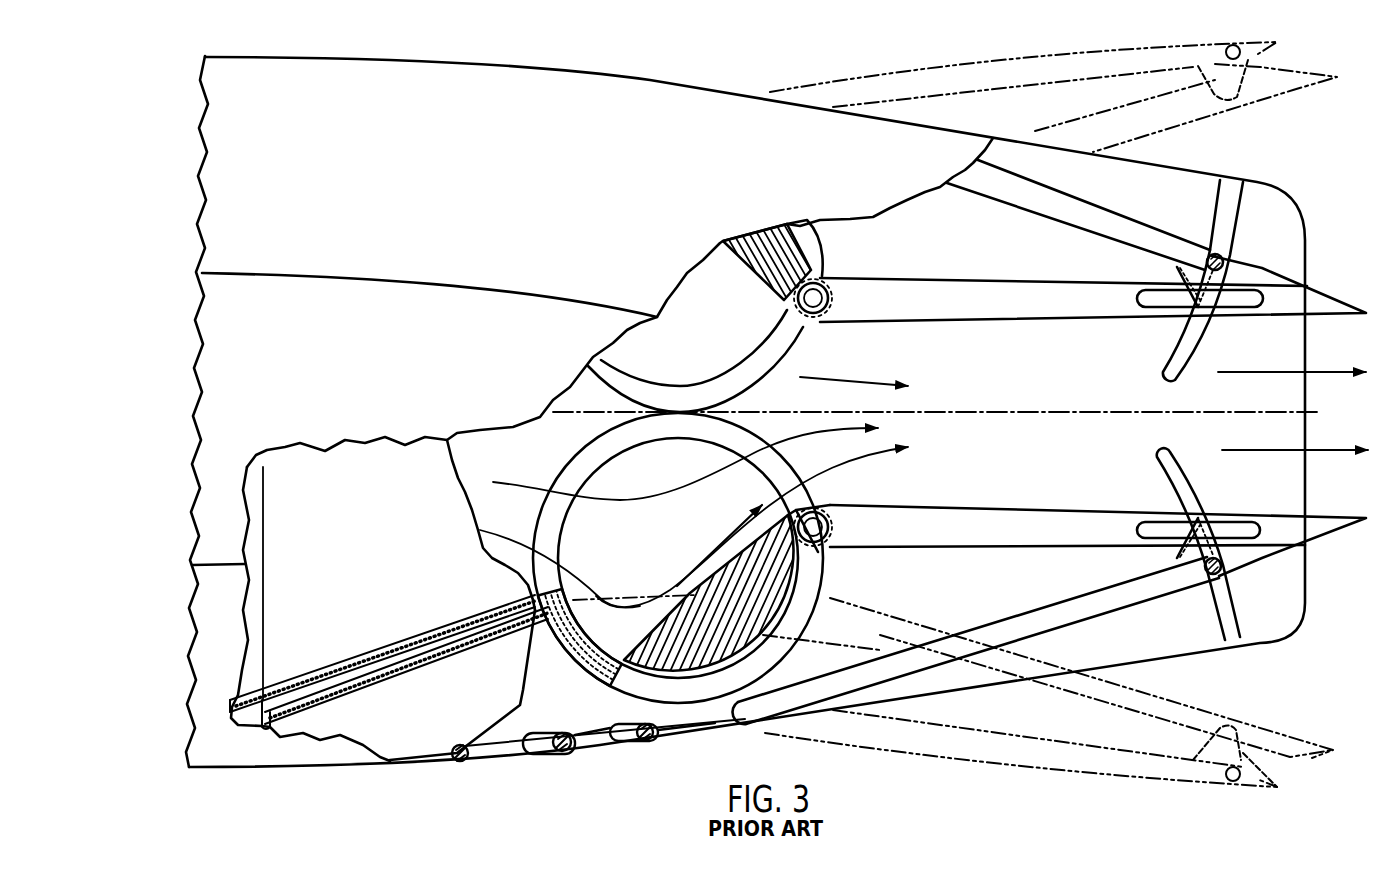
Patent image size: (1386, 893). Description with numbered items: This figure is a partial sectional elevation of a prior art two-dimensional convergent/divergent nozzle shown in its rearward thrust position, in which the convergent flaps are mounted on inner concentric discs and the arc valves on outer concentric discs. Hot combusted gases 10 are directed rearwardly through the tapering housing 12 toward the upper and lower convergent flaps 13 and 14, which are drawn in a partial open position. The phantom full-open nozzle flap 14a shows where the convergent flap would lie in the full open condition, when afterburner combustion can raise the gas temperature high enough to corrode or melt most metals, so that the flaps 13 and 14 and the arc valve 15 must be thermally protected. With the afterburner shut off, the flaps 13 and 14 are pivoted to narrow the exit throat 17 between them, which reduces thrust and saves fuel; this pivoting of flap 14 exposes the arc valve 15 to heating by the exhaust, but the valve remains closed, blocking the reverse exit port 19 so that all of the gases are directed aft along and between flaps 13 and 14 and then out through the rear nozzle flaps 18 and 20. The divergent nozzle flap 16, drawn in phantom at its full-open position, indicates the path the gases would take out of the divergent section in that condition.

The hot combusted gases 10 is at (196, 411).
The tapering housing 12 is at (388, 547).
The convergent flap 13 is at (753, 262).
The convergent flap 14 is at (654, 627).
The full-open nozzle flap 14a is at (623, 600).
The arc valve 15 is at (590, 658).
The divergent nozzle flap 16 is at (1187, 108).
The exit throat 17 is at (985, 408).
The rear nozzle flap 18 is at (1078, 290).
The reverse exit port 19 is at (568, 727).
The rear nozzle flap 20 is at (1045, 532).